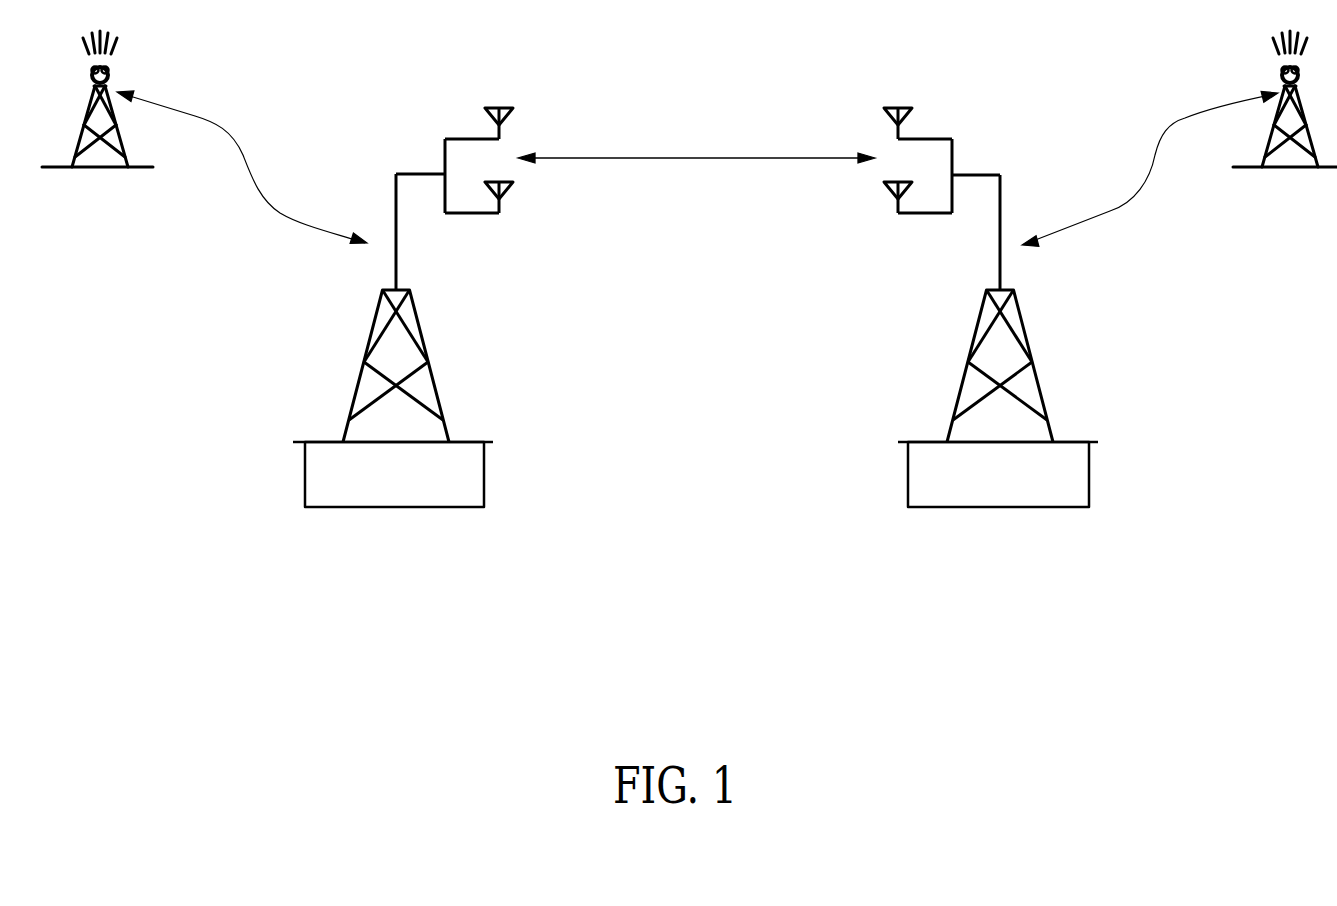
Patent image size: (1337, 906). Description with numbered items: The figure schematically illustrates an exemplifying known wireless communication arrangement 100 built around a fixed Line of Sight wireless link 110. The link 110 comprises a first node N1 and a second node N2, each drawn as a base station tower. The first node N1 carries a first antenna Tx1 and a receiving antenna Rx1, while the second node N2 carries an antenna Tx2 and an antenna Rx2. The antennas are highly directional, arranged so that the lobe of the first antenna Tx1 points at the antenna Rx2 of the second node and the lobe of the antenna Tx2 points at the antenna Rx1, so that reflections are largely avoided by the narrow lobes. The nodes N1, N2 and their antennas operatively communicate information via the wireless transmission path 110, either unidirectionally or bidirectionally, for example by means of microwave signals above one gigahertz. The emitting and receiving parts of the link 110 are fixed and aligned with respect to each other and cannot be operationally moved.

The wireless communication system 100 is at (689, 366).
The wireless communication link 110 is at (696, 162).
The first antenna Tx1 is at (494, 107).
The second antenna Rx1 is at (496, 218).
The second antenna Tx2 is at (904, 105).
The second antenna Rx2 is at (905, 218).
The first node N1 is at (397, 422).
The second node N2 is at (1002, 422).